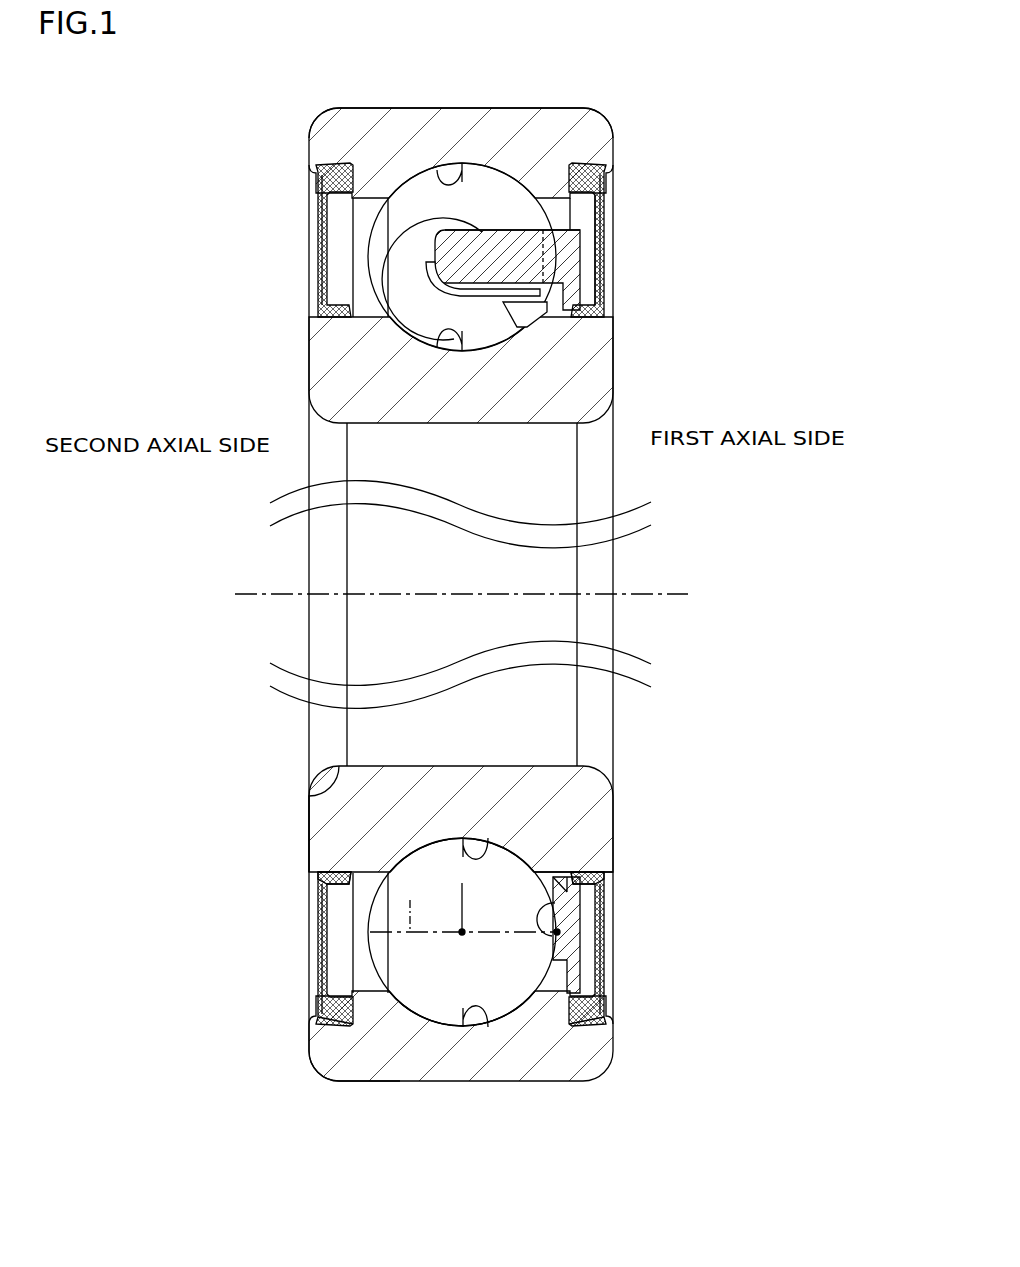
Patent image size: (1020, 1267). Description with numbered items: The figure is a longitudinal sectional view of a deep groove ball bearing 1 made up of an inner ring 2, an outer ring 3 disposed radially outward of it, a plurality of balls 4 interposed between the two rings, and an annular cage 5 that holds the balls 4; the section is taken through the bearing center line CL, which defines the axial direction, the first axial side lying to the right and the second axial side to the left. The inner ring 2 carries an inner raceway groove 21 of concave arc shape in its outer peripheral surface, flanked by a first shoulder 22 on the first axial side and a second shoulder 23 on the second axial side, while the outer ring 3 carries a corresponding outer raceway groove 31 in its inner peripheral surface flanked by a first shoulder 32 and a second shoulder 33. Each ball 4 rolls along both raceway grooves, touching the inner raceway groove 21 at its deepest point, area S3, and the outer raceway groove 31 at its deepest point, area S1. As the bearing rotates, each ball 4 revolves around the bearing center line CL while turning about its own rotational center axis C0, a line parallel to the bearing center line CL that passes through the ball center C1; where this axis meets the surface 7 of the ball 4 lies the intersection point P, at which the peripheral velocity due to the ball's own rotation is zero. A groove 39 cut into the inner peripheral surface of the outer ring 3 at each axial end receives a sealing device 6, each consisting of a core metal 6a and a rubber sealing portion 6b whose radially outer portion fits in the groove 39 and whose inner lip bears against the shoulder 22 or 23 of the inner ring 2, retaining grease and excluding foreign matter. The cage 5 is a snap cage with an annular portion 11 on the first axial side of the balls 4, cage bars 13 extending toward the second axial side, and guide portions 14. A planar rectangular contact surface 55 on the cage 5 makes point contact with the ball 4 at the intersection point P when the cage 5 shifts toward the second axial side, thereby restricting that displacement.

The ball bearing 1 is at (556, 108).
The inner ring 2 is at (605, 344).
The outer ring 3 is at (600, 145).
The ball 4 is at (422, 253).
The annular cage 5 is at (583, 240).
The sealing device 6 is at (318, 253).
The core metal 6a is at (322, 915).
The sealing portion 6b is at (322, 935).
The surface of the ball 7 is at (515, 857).
The annular portion 11 is at (573, 272).
The cage bar 13 is at (490, 258).
The guide portion 14 is at (515, 300).
The inner raceway groove 21 is at (460, 840).
The first shoulder 22 is at (573, 860).
The second shoulder 23 is at (350, 862).
The outer raceway groove 31 is at (485, 1018).
The first shoulder 32 is at (550, 1010).
The second shoulder 33 is at (372, 1010).
The groove 39 is at (325, 1010).
The contact surface 55 is at (575, 906).
The area S1 is at (437, 170).
The area S3 is at (437, 348).
The bearing center line CL is at (672, 592).
The rotational center axis C0 is at (410, 900).
The ball center C1 is at (462, 883).
The intersection point P is at (555, 934).